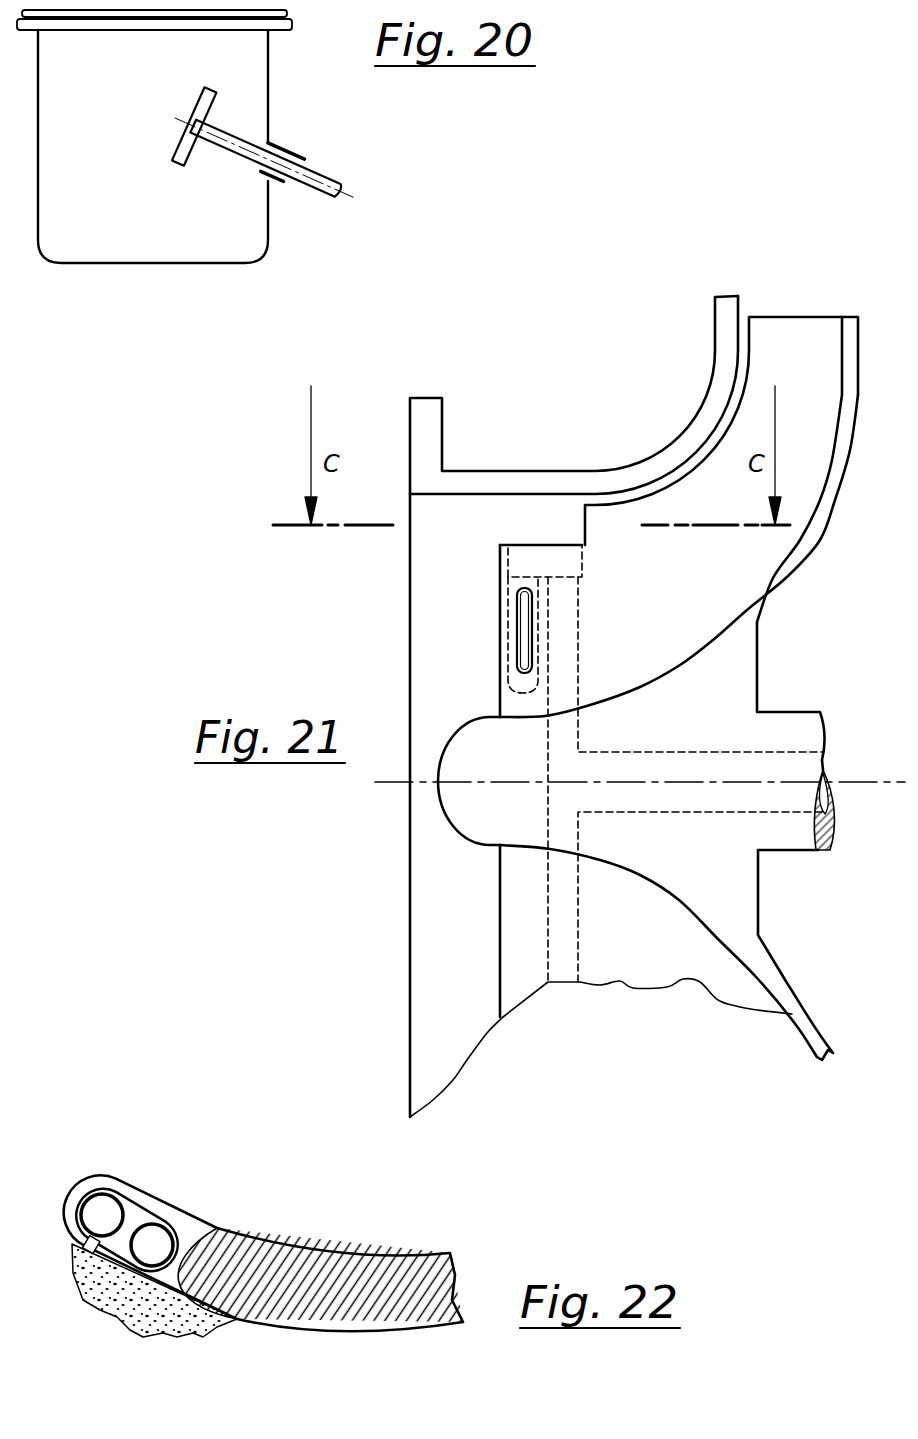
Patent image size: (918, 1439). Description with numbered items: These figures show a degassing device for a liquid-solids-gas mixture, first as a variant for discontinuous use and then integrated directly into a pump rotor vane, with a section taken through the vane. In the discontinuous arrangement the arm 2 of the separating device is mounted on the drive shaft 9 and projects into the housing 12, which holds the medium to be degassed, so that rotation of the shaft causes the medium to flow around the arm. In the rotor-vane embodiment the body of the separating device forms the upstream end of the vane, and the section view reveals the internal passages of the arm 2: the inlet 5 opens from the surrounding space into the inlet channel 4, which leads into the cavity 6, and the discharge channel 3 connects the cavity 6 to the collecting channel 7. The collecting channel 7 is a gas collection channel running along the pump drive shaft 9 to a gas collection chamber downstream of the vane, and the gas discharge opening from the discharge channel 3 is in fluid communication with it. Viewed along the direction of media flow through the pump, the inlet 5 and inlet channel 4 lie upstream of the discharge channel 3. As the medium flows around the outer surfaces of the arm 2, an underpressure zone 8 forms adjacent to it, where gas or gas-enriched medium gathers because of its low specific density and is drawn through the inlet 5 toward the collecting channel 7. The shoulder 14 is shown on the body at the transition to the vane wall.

In FIG. 20, the arm 2 is at (197, 108).
In FIG. 21, the arm 2 is at (500, 646).
In FIG. 22, the arm 2 is at (190, 1233).
In FIG. 21, the channel 3 is at (566, 610).
In FIG. 22, the channel 3 is at (157, 1233).
In FIG. 21, the channel 4 is at (518, 683).
In FIG. 22, the channel 4 is at (102, 1200).
In FIG. 21, the inlet 5 is at (522, 620).
In FIG. 22, the inlet 5 is at (91, 1250).
In FIG. 21, the cavity 6 is at (541, 565).
In FIG. 22, the cavity 6 is at (133, 1215).
In FIG. 21, the collecting channel 7 is at (742, 773).
In FIG. 22, the underpressure zone 8 is at (140, 1331).
In FIG. 20, the drive shaft 9 is at (315, 178).
In FIG. 21, the drive shaft 9 is at (808, 845).
In FIG. 20, the housing 12 is at (83, 268).
In FIG. 21, the shoulder 14 is at (523, 545).